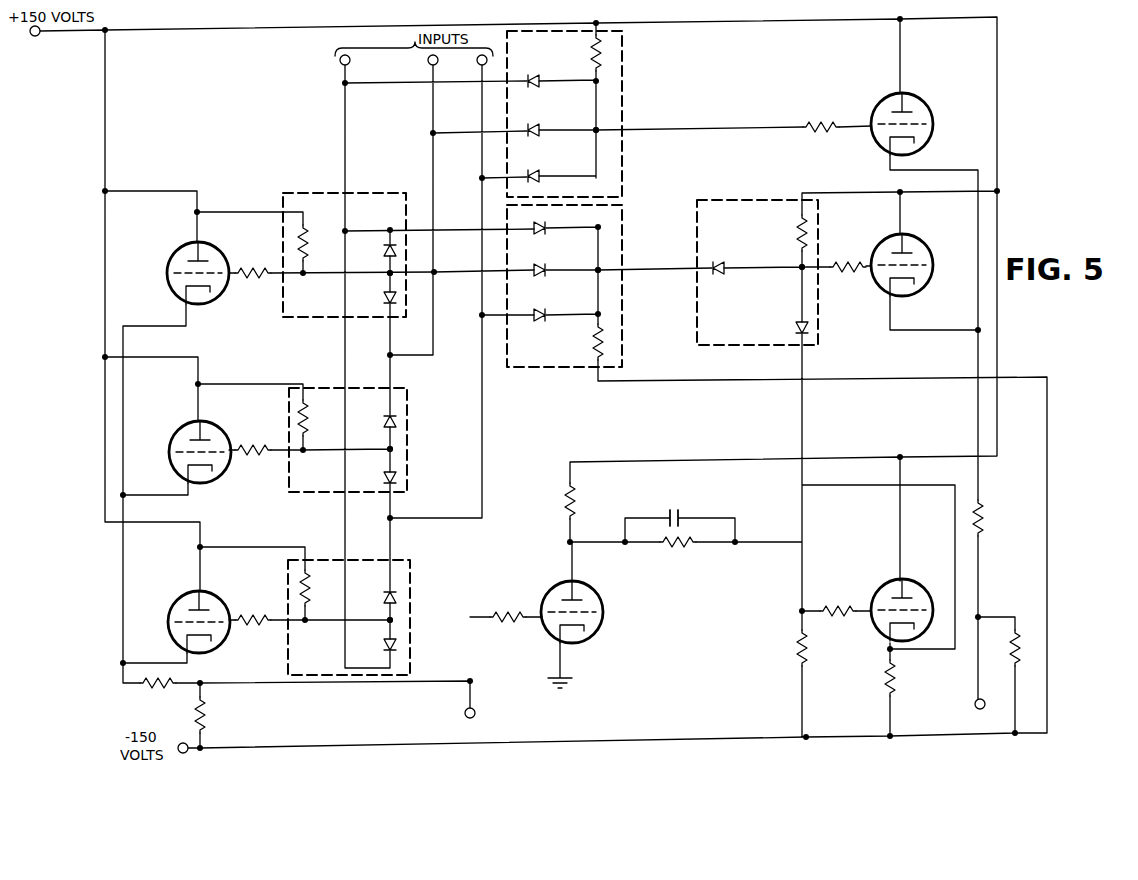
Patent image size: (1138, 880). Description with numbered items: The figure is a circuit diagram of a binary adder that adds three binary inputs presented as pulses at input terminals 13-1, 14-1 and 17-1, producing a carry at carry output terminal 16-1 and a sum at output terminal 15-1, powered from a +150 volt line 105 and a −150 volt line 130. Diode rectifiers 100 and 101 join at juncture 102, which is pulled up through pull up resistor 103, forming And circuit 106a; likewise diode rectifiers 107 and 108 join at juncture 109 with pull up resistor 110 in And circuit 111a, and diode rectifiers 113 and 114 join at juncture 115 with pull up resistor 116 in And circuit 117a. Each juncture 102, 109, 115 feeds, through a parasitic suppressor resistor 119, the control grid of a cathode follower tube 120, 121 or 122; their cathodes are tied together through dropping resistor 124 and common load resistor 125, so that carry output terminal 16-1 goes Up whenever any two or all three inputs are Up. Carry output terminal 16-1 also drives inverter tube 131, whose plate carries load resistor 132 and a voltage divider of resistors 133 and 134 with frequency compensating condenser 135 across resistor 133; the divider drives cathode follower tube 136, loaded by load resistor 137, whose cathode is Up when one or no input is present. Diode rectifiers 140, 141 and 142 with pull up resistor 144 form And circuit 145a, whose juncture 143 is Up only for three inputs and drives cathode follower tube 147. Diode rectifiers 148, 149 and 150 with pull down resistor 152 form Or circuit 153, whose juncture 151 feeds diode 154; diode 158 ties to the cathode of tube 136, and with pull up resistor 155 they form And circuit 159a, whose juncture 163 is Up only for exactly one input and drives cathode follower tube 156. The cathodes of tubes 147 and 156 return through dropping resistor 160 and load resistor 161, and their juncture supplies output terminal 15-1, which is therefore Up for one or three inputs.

The +150 volt line 105 is at (66, 37).
The −150 volt line 130 is at (190, 753).
The input terminal 13-1 is at (340, 62).
The input terminal 14-1 is at (428, 62).
The input terminal 17-1 is at (478, 62).
The carry output terminal 16-1 is at (475, 715).
The output terminal 15-1 is at (975, 709).
The cathode follower tube 120 is at (183, 256).
The cathode follower tube 121 is at (185, 433).
The cathode follower tube 122 is at (185, 603).
The inverter tube 131 is at (603, 604).
The cathode follower tube 136 is at (916, 580).
The cathode follower tube 147 is at (880, 100).
The cathode follower tube 156 is at (918, 241).
The parasitic suppressor resistor 119 is at (250, 284).
The pull up resistor 103 is at (306, 240).
The pull up resistor 110 is at (307, 420).
The pull up resistor 116 is at (320, 588).
The dropping resistor 124 is at (155, 691).
The load resistor 125 is at (209, 712).
The load resistor 132 is at (578, 499).
The resistor 133 is at (673, 548).
The resistor 134 is at (797, 645).
The load resistor 137 is at (898, 678).
The pull up resistor 144 is at (592, 53).
The pull down resistor 152 is at (593, 345).
The pull up resistor 155 is at (797, 232).
The dropping resistor 160 is at (984, 512).
The load resistor 161 is at (1020, 636).
The frequency compensating condenser 135 is at (677, 510).
The diode rectifier 100 is at (386, 252).
The diode rectifier 101 is at (386, 295).
The diode rectifier 107 is at (385, 420).
The diode rectifier 108 is at (386, 478).
The diode rectifier 113 is at (386, 650).
The diode rectifier 114 is at (386, 595).
The diode rectifier 140 is at (540, 66).
The diode rectifier 141 is at (540, 116).
The diode rectifier 142 is at (540, 161).
The diode rectifier 148 is at (542, 232).
The diode rectifier 149 is at (542, 274).
The diode rectifier 150 is at (542, 318).
The diode 154 is at (718, 262).
The diode rectifier 158 is at (796, 324).
The juncture 102 is at (386, 275).
The juncture 109 is at (387, 450).
The juncture 115 is at (387, 622).
The juncture 143 is at (596, 128).
The juncture 151 is at (598, 269).
The juncture 163 is at (798, 270).
The And circuit 106a is at (291, 192).
The And circuit 111a is at (408, 433).
The And circuit 117a is at (410, 576).
The And circuit 145a is at (622, 113).
The Or circuit 153 is at (622, 306).
The And circuit 159a is at (822, 334).